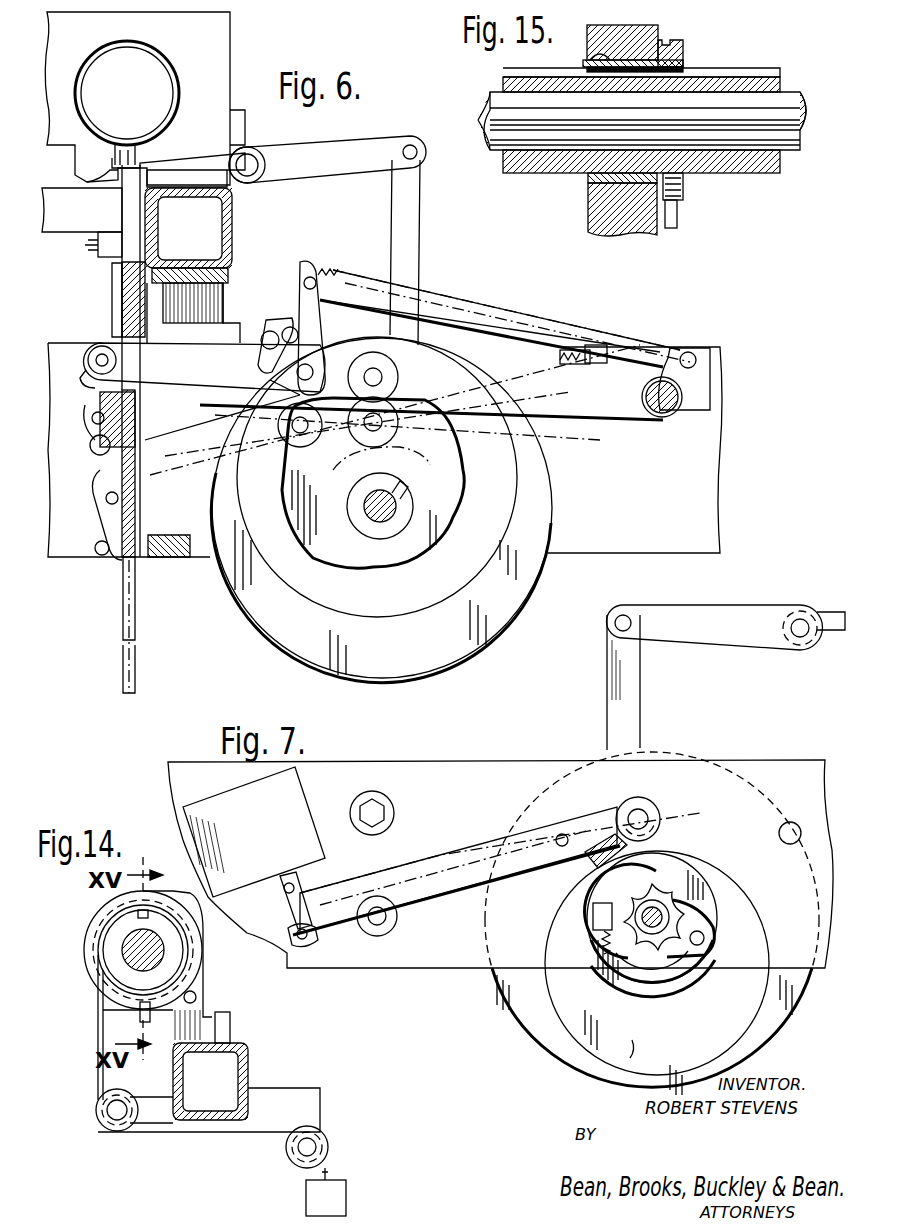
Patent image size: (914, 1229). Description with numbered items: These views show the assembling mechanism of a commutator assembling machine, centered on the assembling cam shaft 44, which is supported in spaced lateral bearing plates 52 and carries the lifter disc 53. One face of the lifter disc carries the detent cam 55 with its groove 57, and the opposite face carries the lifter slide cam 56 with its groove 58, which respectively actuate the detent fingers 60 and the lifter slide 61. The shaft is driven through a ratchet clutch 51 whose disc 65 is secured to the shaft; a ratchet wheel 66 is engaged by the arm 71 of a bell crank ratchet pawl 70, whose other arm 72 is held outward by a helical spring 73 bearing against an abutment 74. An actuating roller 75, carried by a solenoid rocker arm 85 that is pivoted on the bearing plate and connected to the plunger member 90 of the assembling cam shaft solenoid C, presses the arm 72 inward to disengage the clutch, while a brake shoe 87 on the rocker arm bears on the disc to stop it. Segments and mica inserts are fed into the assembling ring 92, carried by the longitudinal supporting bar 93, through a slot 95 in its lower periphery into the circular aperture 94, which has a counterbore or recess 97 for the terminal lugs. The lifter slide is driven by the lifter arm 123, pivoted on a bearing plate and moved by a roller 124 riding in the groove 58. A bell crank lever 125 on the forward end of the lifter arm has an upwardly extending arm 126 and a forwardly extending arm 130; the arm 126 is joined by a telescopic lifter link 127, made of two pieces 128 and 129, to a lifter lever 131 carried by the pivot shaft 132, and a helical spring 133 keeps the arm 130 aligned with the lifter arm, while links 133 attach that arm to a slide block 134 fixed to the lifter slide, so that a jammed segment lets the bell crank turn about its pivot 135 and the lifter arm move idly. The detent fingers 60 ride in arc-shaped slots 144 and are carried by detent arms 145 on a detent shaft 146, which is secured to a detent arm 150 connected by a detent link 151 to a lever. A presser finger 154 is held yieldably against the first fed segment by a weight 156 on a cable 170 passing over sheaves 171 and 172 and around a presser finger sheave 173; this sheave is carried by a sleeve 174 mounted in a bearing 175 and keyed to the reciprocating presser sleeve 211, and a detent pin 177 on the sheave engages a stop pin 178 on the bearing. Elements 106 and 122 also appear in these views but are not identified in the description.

In FIG. 6, the assembling cam shaft 44 is at (380, 523).
In FIG. 7, the assembling cam shaft 44 is at (660, 902).
In FIG. 7, the ratchet clutch 51 is at (705, 893).
In FIG. 6, the lateral bearing plates 52 is at (718, 350).
In FIG. 7, the lateral bearing plates 52 is at (812, 791).
In FIG. 6, the lifter disc 53 is at (535, 598).
In FIG. 7, the lifter disc 53 is at (512, 1012).
In FIG. 7, the detent cam 55 is at (605, 1025).
In FIG. 6, the lifter slide cam 56 is at (490, 505).
In FIG. 7, the groove 57 is at (634, 1050).
In FIG. 6, the groove 58 is at (490, 533).
In FIG. 6, the detent fingers 60 is at (95, 180).
In FIG. 6, the lifter slide 61 is at (128, 205).
In FIG. 7, the clutch disc 65 is at (660, 868).
In FIG. 7, the ratchet wheel 66 is at (668, 952).
In FIG. 7, the bell crank ratchet pawl 70 is at (695, 982).
In FIG. 7, the pawl arm 71 is at (705, 915).
In FIG. 7, the pawl arm 72 is at (645, 1000).
In FIG. 7, the helical spring 73 is at (600, 936).
In FIG. 7, the abutment 74 is at (593, 917).
In FIG. 7, the actuating roller 75 is at (648, 810).
In FIG. 7, the solenoid rocker arm 85 is at (580, 830).
In FIG. 7, the brake shoe 87 is at (590, 868).
In FIG. 7, the plunger member 90 is at (290, 912).
In FIG. 6, the assembling ring 92 is at (222, 58).
In FIG. 6, the supporting bar 93 is at (222, 235).
In FIG. 14, the supporting bar 93 is at (238, 1085).
In FIG. 6, the circular aperture 94 is at (160, 75).
In FIG. 6, the slot 95 is at (130, 150).
In FIG. 6, the counterbore 97 is at (178, 88).
In FIG. 6, the link 106 is at (138, 448).
In FIG. 6, the column 122 is at (115, 305).
In FIG. 6, the lifter arm 123 is at (406, 410).
In FIG. 6, the roller 124 is at (392, 385).
In FIG. 6, the bell crank lever 125 is at (290, 315).
In FIG. 6, the upwardly extending arm 126 is at (300, 278).
In FIG. 6, the lifter link 127 is at (520, 312).
In FIG. 6, the link piece 128 is at (450, 300).
In FIG. 6, the link piece 129 is at (640, 342).
In FIG. 6, the forwardly extending arm 130 is at (205, 367).
In FIG. 6, the lifter lever 131 is at (712, 372).
In FIG. 6, the pivot shaft 132 is at (665, 417).
In FIG. 6, the helical spring 133 is at (328, 275).
In FIG. 6, the slide block 134 is at (95, 440).
In FIG. 6, the pivot 135 is at (278, 378).
In FIG. 6, the arc-shaped slots 144 is at (117, 145).
In FIG. 6, the detent arms 145 is at (190, 155).
In FIG. 7, the detent arms 145 is at (830, 632).
In FIG. 6, the detent shaft 146 is at (250, 158).
In FIG. 7, the detent shaft 146 is at (800, 620).
In FIG. 6, the detent arm 150 is at (327, 159).
In FIG. 7, the detent arm 150 is at (715, 618).
In FIG. 6, the detent link 151 is at (412, 242).
In FIG. 7, the detent link 151 is at (630, 727).
In FIG. 6, the presser finger 154 is at (190, 330).
In FIG. 14, the weight 156 is at (329, 1192).
In FIG. 15, the cable 170 is at (668, 42).
In FIG. 14, the cable 170 is at (240, 1118).
In FIG. 14, the sheave 171 is at (322, 1147).
In FIG. 14, the sheave 172 is at (110, 1128).
In FIG. 15, the presser finger sheave 173 is at (683, 185).
In FIG. 14, the presser finger sheave 173 is at (100, 952).
In FIG. 15, the sleeve 174 is at (592, 55).
In FIG. 15, the bearing 175 is at (635, 20).
In FIG. 14, the bearing 175 is at (196, 960).
In FIG. 15, the detent pin 177 is at (678, 220).
In FIG. 14, the detent pin 177 is at (138, 1015).
In FIG. 14, the stop pin 178 is at (197, 997).
In FIG. 15, the reciprocating presser sleeve 211 is at (738, 75).
In FIG. 14, the reciprocating presser sleeve 211 is at (115, 962).
In FIG. 7, the assembling cam shaft solenoid C is at (305, 805).